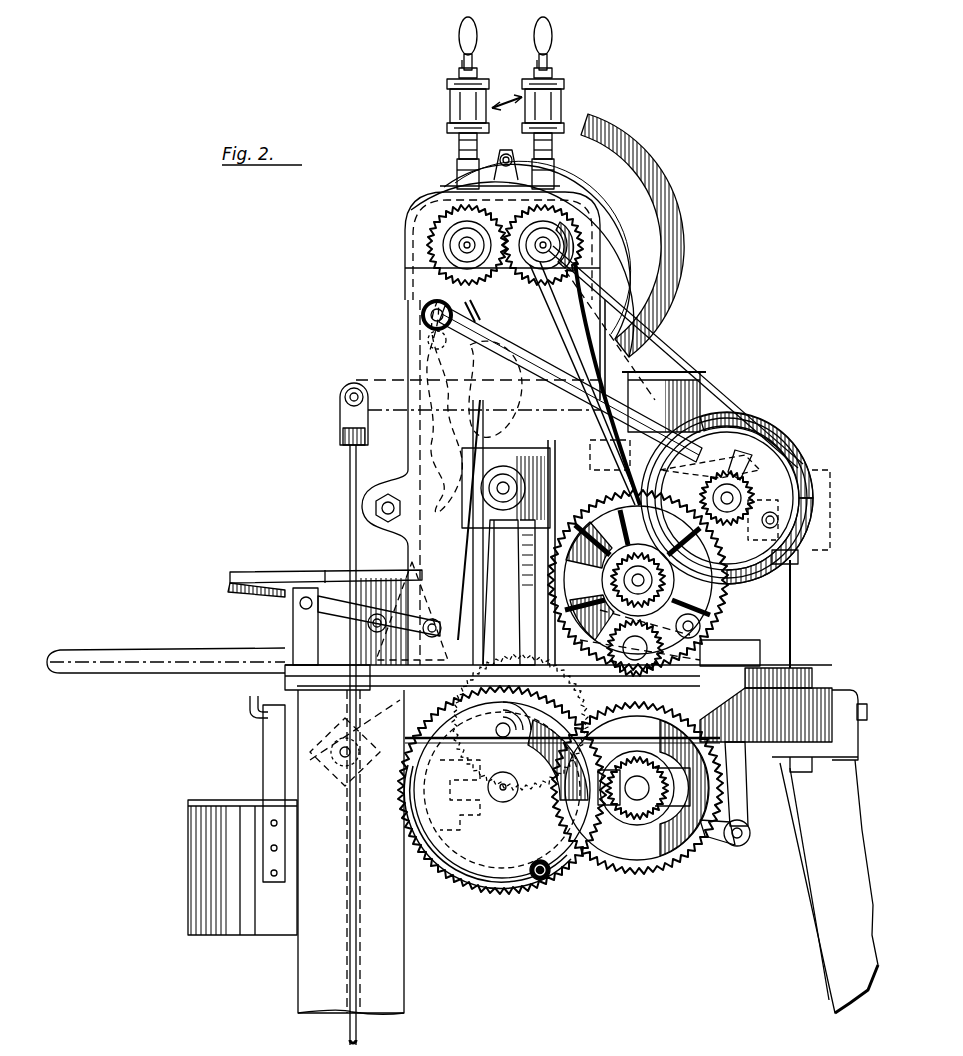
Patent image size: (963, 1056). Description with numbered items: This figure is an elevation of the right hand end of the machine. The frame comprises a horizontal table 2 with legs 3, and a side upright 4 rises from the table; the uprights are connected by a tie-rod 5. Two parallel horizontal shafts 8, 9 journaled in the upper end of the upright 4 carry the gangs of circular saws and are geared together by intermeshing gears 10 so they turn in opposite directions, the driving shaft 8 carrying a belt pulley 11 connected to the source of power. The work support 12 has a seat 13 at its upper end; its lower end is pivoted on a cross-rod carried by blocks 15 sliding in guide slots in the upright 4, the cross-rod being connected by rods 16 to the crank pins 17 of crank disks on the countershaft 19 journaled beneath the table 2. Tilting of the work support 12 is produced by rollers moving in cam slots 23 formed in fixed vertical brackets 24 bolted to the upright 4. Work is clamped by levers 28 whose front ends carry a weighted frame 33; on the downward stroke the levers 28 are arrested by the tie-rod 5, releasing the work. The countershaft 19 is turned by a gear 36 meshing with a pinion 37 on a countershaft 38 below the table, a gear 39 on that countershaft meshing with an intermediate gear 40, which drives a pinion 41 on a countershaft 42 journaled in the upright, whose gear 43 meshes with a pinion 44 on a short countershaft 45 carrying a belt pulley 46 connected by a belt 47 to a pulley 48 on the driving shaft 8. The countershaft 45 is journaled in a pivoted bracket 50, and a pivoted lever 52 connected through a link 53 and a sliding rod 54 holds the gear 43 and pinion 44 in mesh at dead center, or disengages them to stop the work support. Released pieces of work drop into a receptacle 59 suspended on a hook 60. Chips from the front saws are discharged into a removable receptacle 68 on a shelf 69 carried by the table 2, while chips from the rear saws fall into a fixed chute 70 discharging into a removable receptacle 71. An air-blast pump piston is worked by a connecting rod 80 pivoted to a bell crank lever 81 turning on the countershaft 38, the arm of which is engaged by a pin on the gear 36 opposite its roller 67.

The horizontal table 2 is at (820, 692).
The legs 3 is at (398, 990).
The side upright 4 is at (420, 340).
The tie-rod 5 is at (388, 494).
The driving shaft 8 is at (575, 240).
The saw shaft 9 is at (448, 230).
The intermeshing gears 10 is at (525, 262).
The belt pulley 11 is at (640, 178).
The work support 12 is at (589, 552).
The seat 13 is at (440, 192).
The blocks 15 is at (550, 479).
The rods 16 is at (470, 562).
The crank pins 17 is at (410, 762).
The countershaft 19 is at (498, 790).
The cam slots 23 is at (474, 406).
The vertical brackets 24 is at (530, 420).
The levers 28 is at (366, 392).
The frame 33 is at (350, 488).
The gear 36 is at (464, 886).
The pinion 37 is at (602, 862).
The countershaft 38 is at (672, 858).
The gear 39 is at (648, 826).
The intermediate gear 40 is at (760, 652).
The pinion 41 is at (726, 500).
The countershaft 42 is at (614, 570).
The gear 43 is at (582, 520).
The pinion 44 is at (586, 388).
The short countershaft 45 is at (748, 488).
The belt pulley 46 is at (770, 438).
The belt 47 is at (660, 340).
The pulley 48 is at (555, 225).
The bracket 50 is at (810, 545).
The pivoted lever 52 is at (260, 588).
The link 53 is at (300, 590).
The sliding rod 54 is at (496, 624).
The receptacle 59 is at (190, 866).
The hook 60 is at (250, 712).
The roller 67 is at (538, 882).
The removable receptacle 68 is at (325, 570).
The shelf 69 is at (148, 664).
The fixed chute 70 is at (595, 320).
The removable receptacle 71 is at (664, 402).
The connecting rod 80 is at (742, 804).
The bell crank lever 81 is at (732, 846).